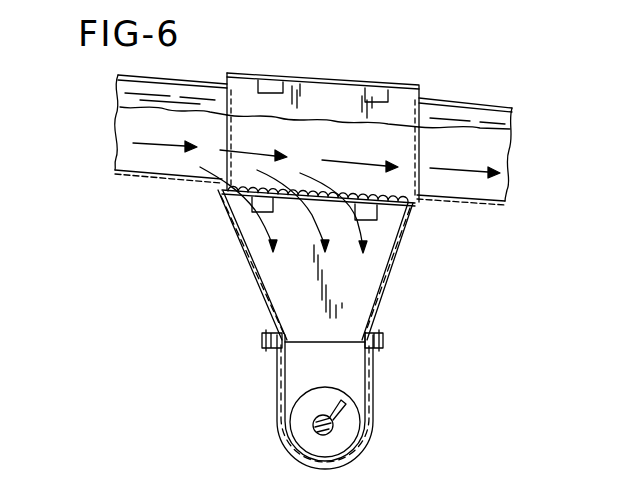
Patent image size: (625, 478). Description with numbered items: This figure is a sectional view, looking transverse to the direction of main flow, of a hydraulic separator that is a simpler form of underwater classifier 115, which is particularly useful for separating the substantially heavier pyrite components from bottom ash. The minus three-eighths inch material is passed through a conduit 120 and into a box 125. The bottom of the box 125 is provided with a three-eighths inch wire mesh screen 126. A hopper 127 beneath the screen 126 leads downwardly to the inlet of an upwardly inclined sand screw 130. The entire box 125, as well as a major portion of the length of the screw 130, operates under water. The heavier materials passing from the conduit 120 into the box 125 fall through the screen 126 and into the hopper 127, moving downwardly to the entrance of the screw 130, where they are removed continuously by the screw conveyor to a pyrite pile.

The underwater classifier 115 is at (373, 78).
The conduit 120 is at (125, 100).
The box 125 is at (328, 87).
The wire mesh screen 126 is at (392, 208).
The hopper 127 is at (250, 268).
The sand screw 130 is at (290, 452).